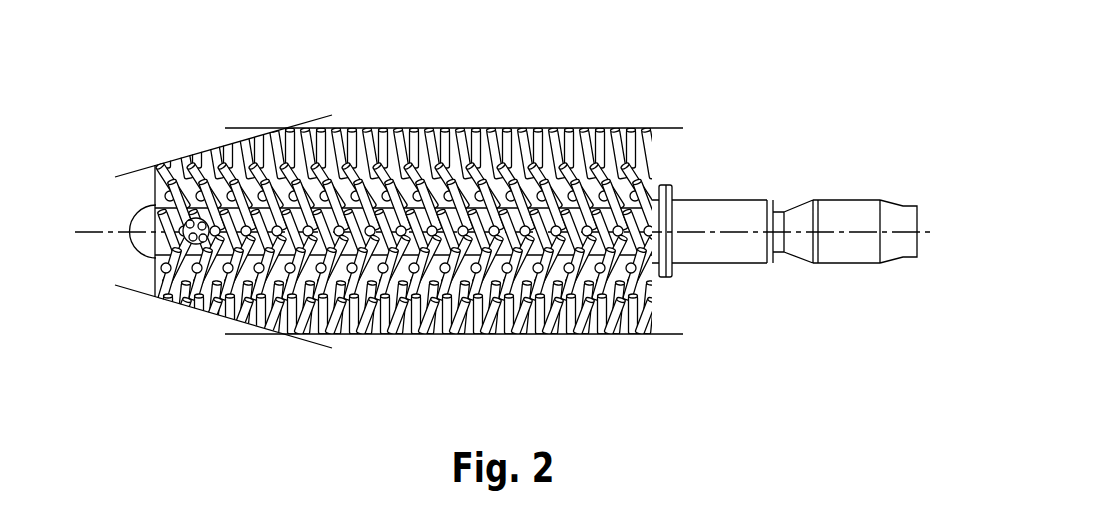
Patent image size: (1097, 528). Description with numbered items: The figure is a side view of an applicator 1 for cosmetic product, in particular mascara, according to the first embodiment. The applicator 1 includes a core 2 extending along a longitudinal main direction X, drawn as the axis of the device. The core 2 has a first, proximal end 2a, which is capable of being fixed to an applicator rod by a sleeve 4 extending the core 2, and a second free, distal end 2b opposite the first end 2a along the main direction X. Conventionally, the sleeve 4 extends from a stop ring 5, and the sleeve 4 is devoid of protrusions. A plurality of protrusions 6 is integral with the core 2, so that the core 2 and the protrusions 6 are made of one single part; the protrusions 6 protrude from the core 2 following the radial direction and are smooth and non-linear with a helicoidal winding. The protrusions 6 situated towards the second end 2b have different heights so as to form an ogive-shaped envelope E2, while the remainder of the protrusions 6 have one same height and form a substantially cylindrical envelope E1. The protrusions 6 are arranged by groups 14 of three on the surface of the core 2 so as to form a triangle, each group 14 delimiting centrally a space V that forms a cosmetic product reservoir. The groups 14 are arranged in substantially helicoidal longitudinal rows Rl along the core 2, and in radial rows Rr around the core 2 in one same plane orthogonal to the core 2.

The applicator 1 is at (501, 219).
The core 2 is at (384, 241).
The first end 2a is at (655, 190).
The second free end 2b is at (140, 205).
The sleeve 4 is at (848, 215).
The stop ring 5 is at (672, 212).
The protrusions 6 is at (428, 334).
The groups 14 is at (168, 297).
The main direction X is at (100, 232).
The space V is at (228, 258).
The cylindrical envelope E1 is at (565, 337).
The ogive-shaped envelope E2 is at (312, 340).
The longitudinal row Rl is at (672, 245).
The radial row Rr is at (648, 350).